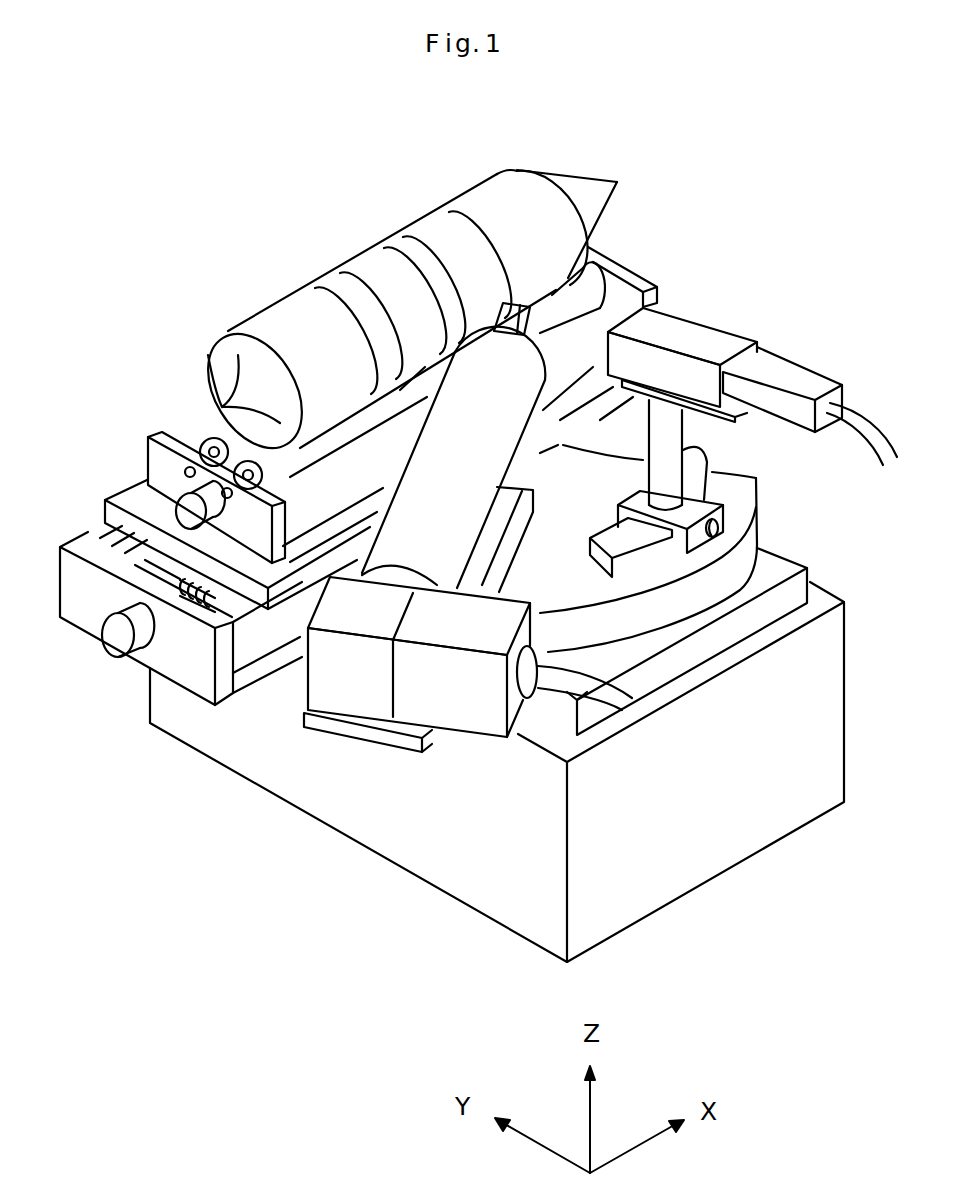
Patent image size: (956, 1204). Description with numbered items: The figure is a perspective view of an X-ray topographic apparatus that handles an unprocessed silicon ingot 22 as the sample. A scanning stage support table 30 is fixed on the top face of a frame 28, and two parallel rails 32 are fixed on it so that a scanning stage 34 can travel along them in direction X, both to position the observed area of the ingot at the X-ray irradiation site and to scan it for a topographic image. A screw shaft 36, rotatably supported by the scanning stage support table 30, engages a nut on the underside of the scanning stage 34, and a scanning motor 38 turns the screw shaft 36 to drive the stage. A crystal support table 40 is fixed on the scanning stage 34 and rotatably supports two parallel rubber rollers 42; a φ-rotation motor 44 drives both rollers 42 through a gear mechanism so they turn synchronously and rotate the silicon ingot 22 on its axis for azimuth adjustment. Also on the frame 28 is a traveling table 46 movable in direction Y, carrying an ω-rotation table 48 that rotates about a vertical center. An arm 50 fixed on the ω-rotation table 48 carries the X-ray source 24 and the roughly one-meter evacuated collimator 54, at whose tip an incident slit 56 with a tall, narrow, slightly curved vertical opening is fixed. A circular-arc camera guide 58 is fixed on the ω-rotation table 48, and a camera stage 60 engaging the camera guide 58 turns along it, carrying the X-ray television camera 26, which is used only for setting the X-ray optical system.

The silicon ingot 22 is at (462, 193).
The X-ray source 24 is at (350, 695).
The X-ray television camera 26 is at (682, 333).
The frame 28 is at (443, 880).
The scanning stage support table 30 is at (195, 677).
The rails 32 is at (102, 538).
The scanning stage 34 is at (130, 502).
The screw shaft 36 is at (122, 575).
The scanning motor 38 is at (122, 643).
The crystal support table 40 is at (163, 438).
The rollers 42 is at (210, 443).
The φ-rotation motor 44 is at (177, 508).
The traveling table 46 is at (730, 633).
The ω-rotation table 48 is at (655, 620).
The arm 50 is at (390, 742).
The collimator 54 is at (497, 463).
The incident slit 56 is at (507, 317).
The camera guide 58 is at (723, 547).
The camera stage 60 is at (720, 517).